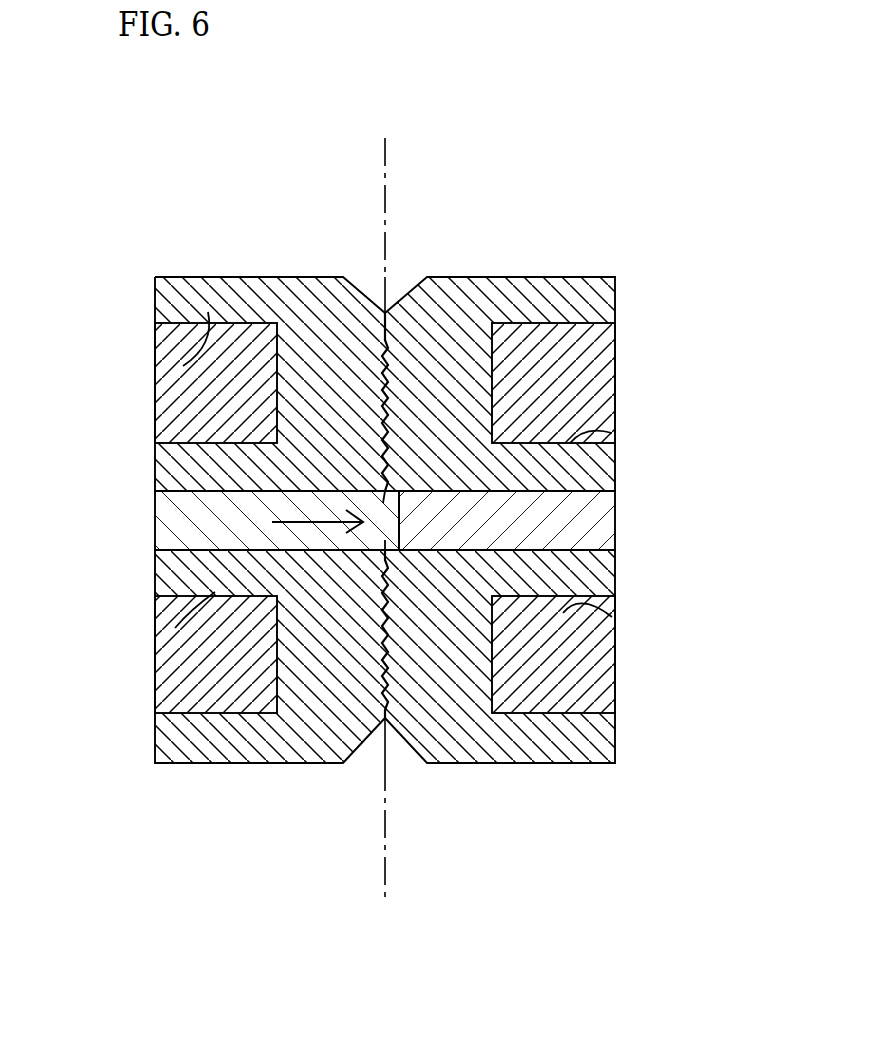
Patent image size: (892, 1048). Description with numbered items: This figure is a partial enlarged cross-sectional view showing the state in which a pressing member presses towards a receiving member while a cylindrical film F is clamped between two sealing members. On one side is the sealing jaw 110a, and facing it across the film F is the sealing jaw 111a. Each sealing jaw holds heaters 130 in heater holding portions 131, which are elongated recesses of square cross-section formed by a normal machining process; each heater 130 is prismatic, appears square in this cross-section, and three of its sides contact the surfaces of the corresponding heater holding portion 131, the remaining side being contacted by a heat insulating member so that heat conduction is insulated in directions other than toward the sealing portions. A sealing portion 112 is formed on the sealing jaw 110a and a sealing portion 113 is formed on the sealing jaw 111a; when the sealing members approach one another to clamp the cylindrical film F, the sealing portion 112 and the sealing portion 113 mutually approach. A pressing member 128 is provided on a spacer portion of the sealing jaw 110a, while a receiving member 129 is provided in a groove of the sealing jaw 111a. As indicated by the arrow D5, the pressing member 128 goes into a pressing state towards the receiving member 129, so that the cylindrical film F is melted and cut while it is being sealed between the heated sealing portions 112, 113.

The sealing jaw 110a is at (197, 277).
The sealing jaw 111a is at (513, 277).
The sealing portion 112 is at (378, 690).
The sealing portion 113 is at (390, 655).
The pressing member 128 is at (177, 527).
The receiving member 129 is at (593, 519).
The heater 130 is at (187, 370).
The heater holding portion 131 is at (183, 366).
The arrow D5 is at (277, 517).
The cylindrical film F is at (386, 180).